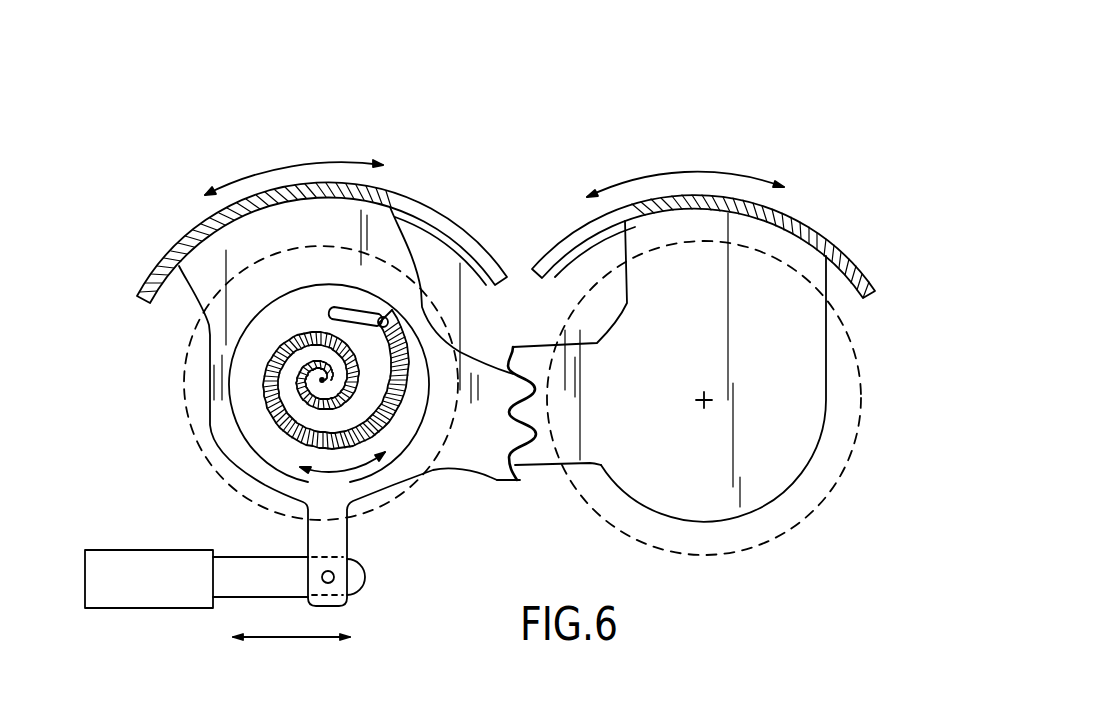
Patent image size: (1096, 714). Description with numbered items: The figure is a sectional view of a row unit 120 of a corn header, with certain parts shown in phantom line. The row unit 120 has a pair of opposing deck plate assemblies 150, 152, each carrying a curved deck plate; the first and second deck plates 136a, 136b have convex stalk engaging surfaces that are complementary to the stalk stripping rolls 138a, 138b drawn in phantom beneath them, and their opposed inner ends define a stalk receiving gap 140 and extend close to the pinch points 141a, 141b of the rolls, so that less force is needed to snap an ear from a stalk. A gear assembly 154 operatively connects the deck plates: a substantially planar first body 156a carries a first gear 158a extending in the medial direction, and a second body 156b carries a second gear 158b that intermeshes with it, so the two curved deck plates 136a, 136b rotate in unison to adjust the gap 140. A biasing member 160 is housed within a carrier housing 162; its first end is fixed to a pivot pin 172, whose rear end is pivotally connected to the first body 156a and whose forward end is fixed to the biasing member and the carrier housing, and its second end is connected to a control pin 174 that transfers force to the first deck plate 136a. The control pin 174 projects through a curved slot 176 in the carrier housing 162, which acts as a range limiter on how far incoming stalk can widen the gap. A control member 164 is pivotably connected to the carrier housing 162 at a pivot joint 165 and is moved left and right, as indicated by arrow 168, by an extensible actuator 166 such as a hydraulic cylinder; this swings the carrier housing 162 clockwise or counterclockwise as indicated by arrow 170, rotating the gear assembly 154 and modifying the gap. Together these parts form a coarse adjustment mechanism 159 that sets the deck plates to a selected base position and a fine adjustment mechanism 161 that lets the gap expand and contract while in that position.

The row unit 120 is at (489, 44).
The first deck plate assembly 150 is at (260, 145).
The second deck plate assembly 152 is at (697, 132).
The first deck plate 136a is at (187, 230).
The second deck plate 136b is at (852, 260).
The first pinch point 141a is at (462, 400).
The second pinch point 141b is at (558, 463).
The stalk receiving gap 140 is at (523, 245).
The gear assembly 154 is at (520, 337).
The first body 156a is at (208, 328).
The second body 156b is at (813, 453).
The first gear 158a is at (497, 483).
The second gear 158b is at (545, 468).
The first stalk stripping roll 138a is at (198, 443).
The second stalk stripping roll 138b is at (752, 548).
The biasing member 160 is at (270, 419).
The carrier housing 162 is at (260, 460).
The pivot pin 172 is at (320, 380).
The control pin 174 is at (386, 318).
The curved slot 176 is at (345, 302).
The arrow 170 is at (353, 470).
The fine adjustment mechanism 161 is at (400, 435).
The coarse adjustment mechanism 159 is at (275, 545).
The control member 164 is at (283, 587).
The pivot joint 165 is at (334, 581).
The extensible actuator 166 is at (165, 597).
The arrow 168 is at (300, 637).